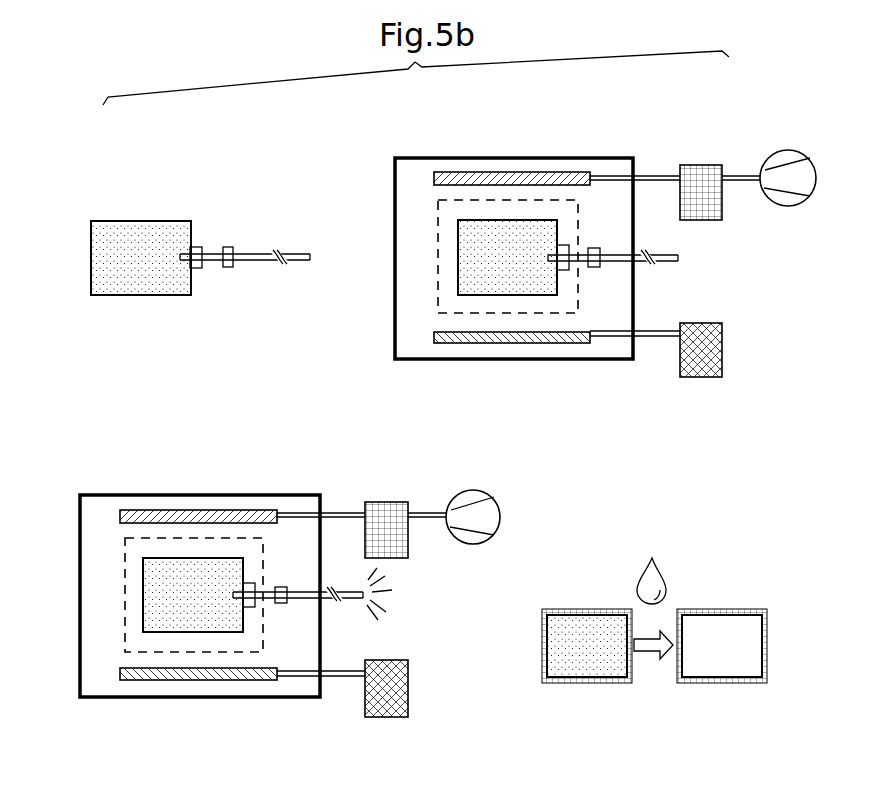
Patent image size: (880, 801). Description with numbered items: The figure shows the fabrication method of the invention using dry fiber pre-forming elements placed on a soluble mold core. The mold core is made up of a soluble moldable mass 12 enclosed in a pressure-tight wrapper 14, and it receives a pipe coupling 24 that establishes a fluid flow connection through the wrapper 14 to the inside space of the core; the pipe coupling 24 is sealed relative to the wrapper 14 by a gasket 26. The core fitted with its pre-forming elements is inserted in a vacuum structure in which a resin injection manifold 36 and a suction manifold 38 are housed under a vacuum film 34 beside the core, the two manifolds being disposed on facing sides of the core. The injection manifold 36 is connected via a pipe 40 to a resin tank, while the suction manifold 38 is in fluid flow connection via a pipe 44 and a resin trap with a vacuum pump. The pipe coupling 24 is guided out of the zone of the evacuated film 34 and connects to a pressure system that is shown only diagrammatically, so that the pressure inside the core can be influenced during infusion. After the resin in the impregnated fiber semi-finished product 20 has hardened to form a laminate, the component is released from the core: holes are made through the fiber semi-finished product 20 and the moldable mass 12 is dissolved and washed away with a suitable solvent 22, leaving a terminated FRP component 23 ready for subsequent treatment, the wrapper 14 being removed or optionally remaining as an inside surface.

The moldable mass 12 is at (150, 296).
The wrapper 14 is at (125, 221).
The fiber semi-finished product 20 is at (596, 609).
The solvent 22 is at (660, 566).
The FRP component 23 is at (720, 683).
The pipe coupling 24 is at (206, 248).
The gasket 26 is at (196, 270).
The vacuum film 34 is at (233, 495).
The resin injection manifold 36 is at (540, 343).
The suction manifold 38 is at (485, 172).
The pipe 40 is at (668, 343).
The pipe 44 is at (652, 172).